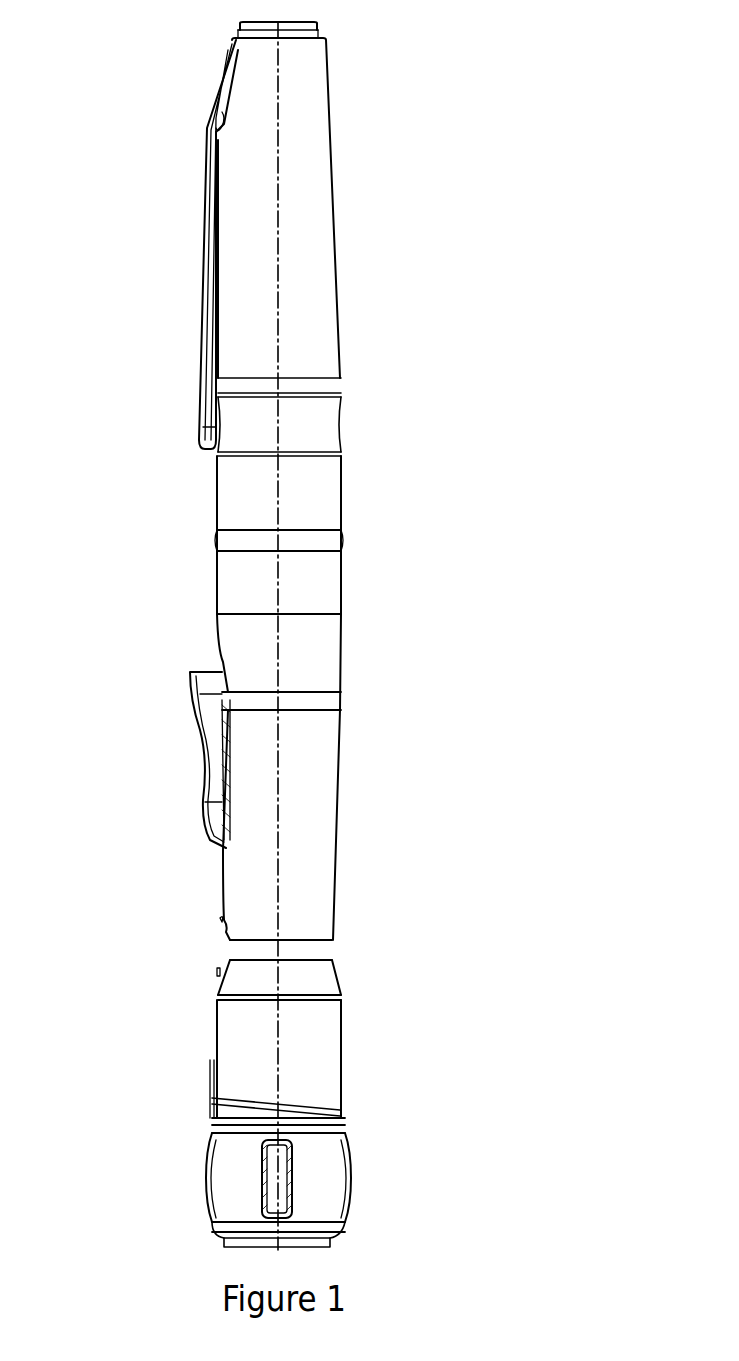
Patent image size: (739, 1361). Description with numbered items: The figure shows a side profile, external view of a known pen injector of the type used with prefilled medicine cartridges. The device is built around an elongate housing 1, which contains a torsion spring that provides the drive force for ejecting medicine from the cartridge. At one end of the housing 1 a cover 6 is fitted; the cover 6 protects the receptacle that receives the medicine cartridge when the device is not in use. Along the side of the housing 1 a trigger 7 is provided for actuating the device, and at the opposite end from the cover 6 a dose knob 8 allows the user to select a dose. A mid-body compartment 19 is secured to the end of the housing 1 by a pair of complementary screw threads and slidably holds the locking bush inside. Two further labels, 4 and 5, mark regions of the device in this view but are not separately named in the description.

The housing 1 is at (336, 780).
The cap section 4 is at (445, 55).
The dose setting section 5 is at (472, 1167).
The cover 6 is at (338, 238).
The trigger 7 is at (213, 713).
The dose knob 8 is at (260, 1175).
The mid-body compartment 19 is at (318, 642).